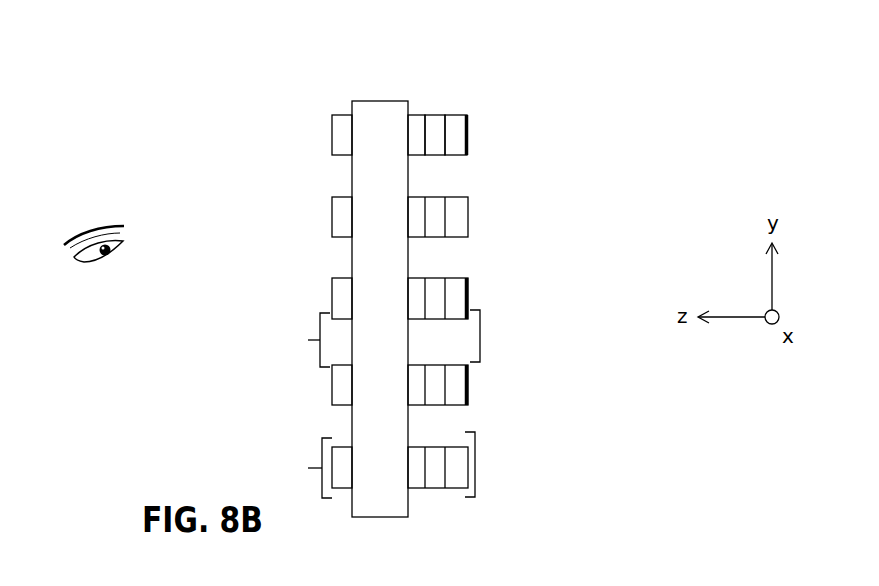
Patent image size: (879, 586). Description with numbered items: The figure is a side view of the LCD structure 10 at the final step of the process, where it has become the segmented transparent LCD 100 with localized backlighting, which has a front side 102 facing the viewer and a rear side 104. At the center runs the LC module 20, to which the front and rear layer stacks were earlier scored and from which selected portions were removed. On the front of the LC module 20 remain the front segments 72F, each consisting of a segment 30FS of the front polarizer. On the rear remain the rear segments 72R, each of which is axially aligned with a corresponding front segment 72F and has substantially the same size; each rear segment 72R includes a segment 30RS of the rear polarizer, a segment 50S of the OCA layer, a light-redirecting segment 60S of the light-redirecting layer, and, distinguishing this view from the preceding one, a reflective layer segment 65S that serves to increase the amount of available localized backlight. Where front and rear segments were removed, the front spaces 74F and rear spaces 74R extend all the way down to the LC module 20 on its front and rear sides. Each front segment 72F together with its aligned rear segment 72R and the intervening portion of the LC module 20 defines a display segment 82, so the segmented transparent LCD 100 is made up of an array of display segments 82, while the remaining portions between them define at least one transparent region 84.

The LCD structure 10 is at (225, 72).
The segmented transparent LCD 100 is at (145, 35).
The front side 102 is at (253, 150).
The rear side 104 is at (620, 100).
The LC module 20 is at (377, 101).
The segment of front polarizer 30FS is at (338, 114).
The segment of rear polarizer 30RS is at (415, 114).
The segment of OCA layer 50S is at (438, 114).
The light-redirecting segment 60S is at (457, 114).
The reflective layer segment 65S is at (469, 133).
The front space 74F is at (340, 257).
The rear space 74R is at (453, 257).
The front segment 72F is at (325, 385).
The rear segment 72R is at (472, 380).
The transparent region 84 is at (480, 338).
The display segment 82 is at (475, 468).